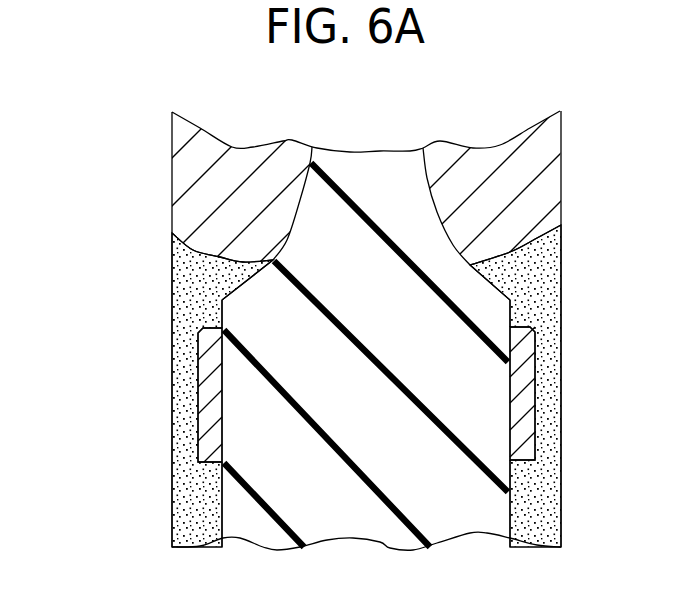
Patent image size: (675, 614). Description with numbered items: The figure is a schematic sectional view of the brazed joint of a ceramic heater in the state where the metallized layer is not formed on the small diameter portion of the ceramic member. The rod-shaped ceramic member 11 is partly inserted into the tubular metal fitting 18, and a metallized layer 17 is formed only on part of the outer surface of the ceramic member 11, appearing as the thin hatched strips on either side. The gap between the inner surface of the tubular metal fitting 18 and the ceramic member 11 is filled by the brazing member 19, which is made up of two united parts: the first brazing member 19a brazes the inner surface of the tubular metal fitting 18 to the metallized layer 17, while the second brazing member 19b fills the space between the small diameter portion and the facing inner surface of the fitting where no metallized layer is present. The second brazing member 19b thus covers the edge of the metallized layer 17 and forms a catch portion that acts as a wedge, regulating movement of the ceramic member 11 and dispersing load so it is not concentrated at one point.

The ceramic member 11 is at (255, 488).
The metallized layer 17 is at (208, 413).
The tubular metal fitting 18 is at (190, 155).
The brazing member 19 is at (75, 232).
The first brazing member 19a is at (188, 333).
The second brazing member 19b is at (227, 280).